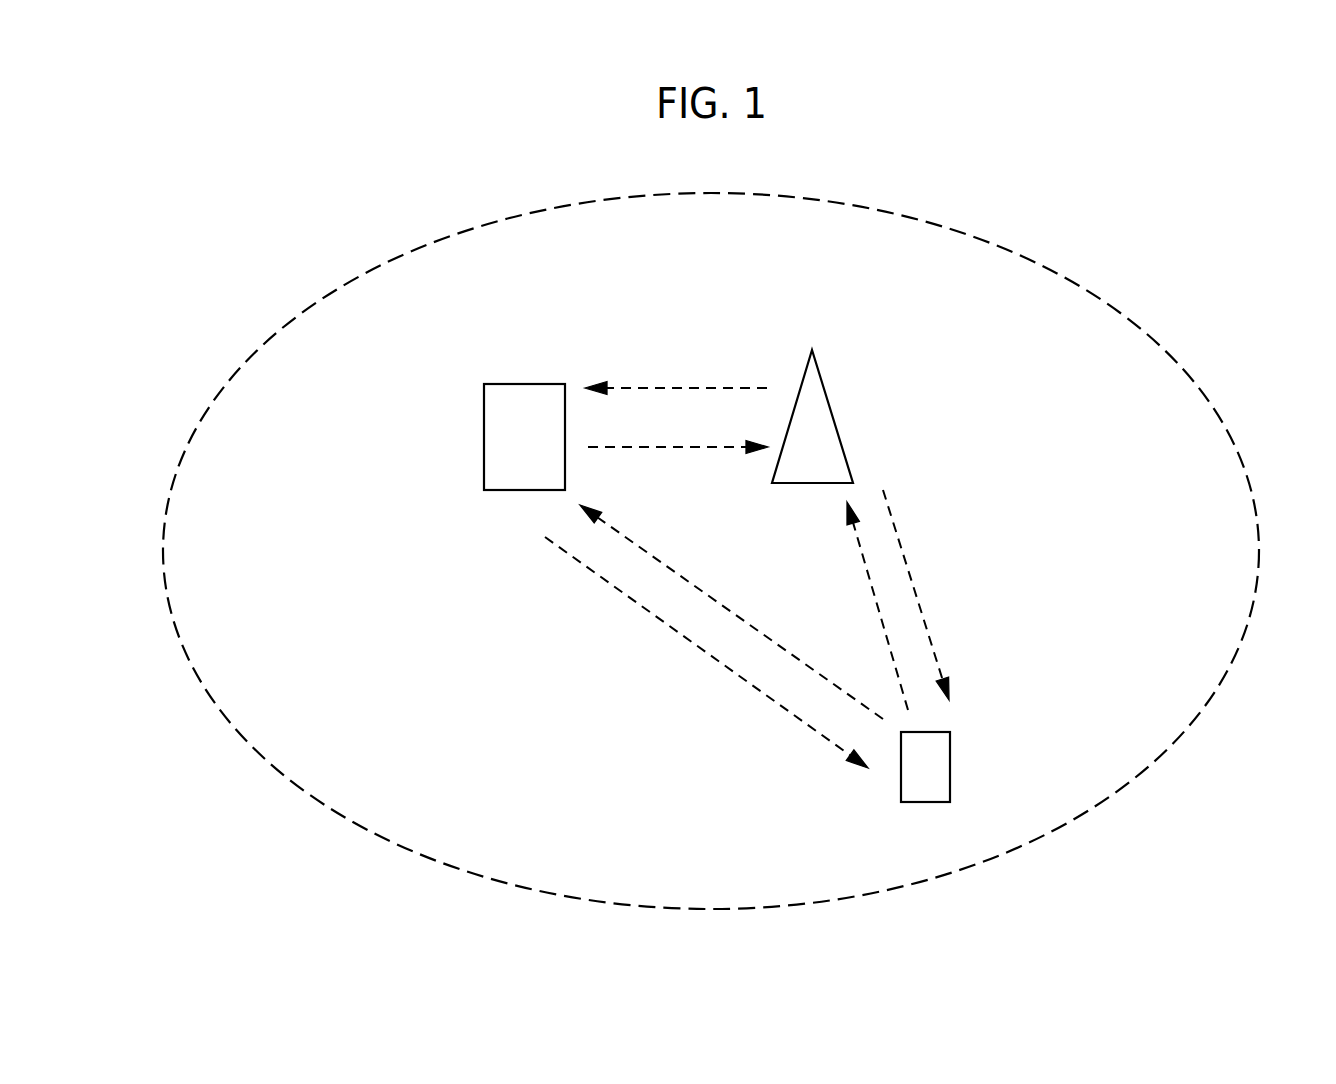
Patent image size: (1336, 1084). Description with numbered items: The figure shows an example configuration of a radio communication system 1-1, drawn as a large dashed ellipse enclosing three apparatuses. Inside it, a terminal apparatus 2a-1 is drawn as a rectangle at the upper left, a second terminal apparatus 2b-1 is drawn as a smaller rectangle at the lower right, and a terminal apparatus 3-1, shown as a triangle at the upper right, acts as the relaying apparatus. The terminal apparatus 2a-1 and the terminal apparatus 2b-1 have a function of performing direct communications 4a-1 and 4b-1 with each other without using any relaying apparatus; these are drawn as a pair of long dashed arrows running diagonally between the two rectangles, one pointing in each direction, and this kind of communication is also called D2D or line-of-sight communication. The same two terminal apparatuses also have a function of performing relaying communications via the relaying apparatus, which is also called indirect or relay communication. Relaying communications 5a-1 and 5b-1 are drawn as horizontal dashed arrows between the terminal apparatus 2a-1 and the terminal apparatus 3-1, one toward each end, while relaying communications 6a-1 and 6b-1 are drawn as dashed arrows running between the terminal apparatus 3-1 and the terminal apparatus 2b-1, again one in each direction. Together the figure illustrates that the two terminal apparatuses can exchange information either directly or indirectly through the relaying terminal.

The radio communication system 1-1 is at (422, 855).
The terminal apparatus 2a-1 is at (502, 490).
The terminal apparatus 2b-1 is at (923, 802).
The terminal apparatus 3-1 is at (805, 483).
The direct communication 4a-1 is at (807, 670).
The direct communication 4b-1 is at (713, 660).
The relaying communication 5a-1 is at (663, 389).
The relaying communication 5b-1 is at (702, 448).
The relaying communication 6a-1 is at (873, 590).
The relaying communication 6b-1 is at (927, 625).